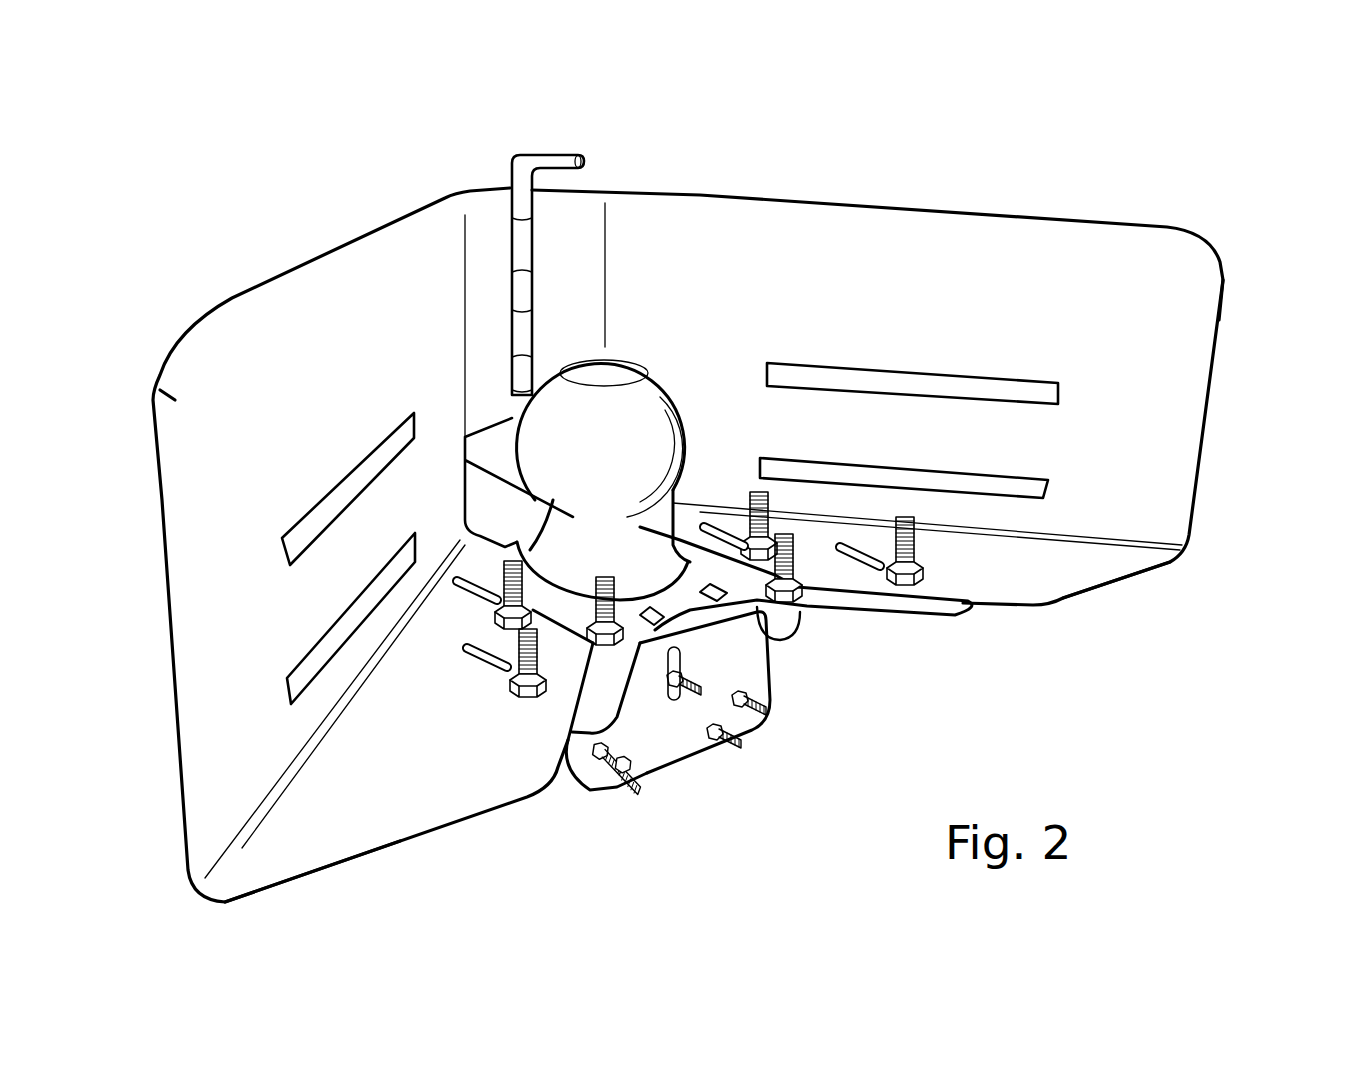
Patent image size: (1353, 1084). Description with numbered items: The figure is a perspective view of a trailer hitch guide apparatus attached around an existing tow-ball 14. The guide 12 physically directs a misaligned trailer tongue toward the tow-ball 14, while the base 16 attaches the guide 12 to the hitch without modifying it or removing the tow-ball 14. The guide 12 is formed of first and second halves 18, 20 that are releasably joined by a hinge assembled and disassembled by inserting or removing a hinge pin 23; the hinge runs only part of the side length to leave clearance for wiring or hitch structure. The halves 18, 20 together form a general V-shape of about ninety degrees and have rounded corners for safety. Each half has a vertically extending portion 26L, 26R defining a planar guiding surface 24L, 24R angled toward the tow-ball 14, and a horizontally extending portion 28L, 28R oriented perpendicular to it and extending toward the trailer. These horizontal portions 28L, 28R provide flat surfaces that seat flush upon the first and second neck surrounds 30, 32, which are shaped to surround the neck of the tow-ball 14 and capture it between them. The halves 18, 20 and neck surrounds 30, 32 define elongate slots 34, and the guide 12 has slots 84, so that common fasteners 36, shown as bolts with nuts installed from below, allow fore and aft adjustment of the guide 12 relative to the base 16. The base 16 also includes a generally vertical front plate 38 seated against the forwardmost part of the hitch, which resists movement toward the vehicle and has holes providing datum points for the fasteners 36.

The guide 12 is at (240, 258).
The tow-ball 14 is at (655, 408).
The base 16 is at (698, 780).
The first half 18 is at (400, 245).
The second half 20 is at (812, 224).
The hinge pin 23 is at (540, 163).
The planar guiding surface 24L is at (192, 615).
The planar guiding surface 24R is at (1185, 397).
The vertically extending portion 26L is at (148, 514).
The vertically extending portion 26R is at (1240, 338).
The horizontally extending portion 28L is at (330, 867).
The horizontally extending portion 28R is at (1030, 607).
The first neck surround 30 is at (590, 703).
The second neck surround 32 is at (793, 633).
The elongate slots 34 is at (458, 582).
The fasteners 36 is at (527, 693).
The front plate 38 is at (753, 675).
The slots 84 is at (677, 662).